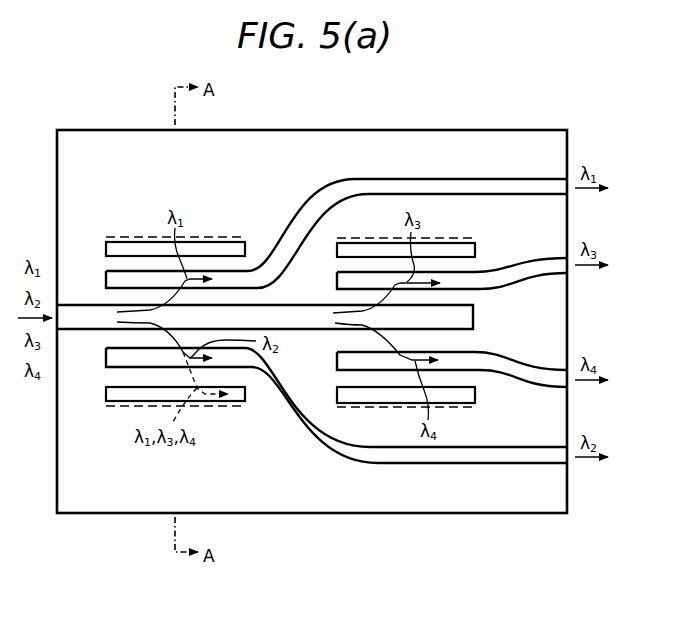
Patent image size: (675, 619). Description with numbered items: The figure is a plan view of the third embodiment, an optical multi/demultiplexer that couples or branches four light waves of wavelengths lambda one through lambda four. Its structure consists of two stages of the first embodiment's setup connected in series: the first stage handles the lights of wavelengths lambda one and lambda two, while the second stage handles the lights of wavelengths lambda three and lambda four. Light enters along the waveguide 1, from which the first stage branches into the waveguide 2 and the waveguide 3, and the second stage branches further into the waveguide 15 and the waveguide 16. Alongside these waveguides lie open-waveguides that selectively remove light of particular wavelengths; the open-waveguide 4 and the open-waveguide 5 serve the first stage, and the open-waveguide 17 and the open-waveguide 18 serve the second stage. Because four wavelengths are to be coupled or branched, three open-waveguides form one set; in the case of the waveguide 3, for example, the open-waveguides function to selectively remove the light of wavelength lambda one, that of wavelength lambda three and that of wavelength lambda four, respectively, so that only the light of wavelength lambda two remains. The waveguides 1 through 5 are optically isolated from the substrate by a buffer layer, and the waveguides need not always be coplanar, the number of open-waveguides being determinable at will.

The waveguide 1 is at (86, 325).
The waveguide 2 is at (417, 178).
The waveguide 3 is at (443, 463).
The open-waveguide 4 is at (198, 242).
The open-waveguide 5 is at (211, 401).
The waveguide 15 is at (545, 259).
The waveguide 16 is at (537, 369).
The open-waveguide 17 is at (367, 243).
The open-waveguide 18 is at (460, 403).